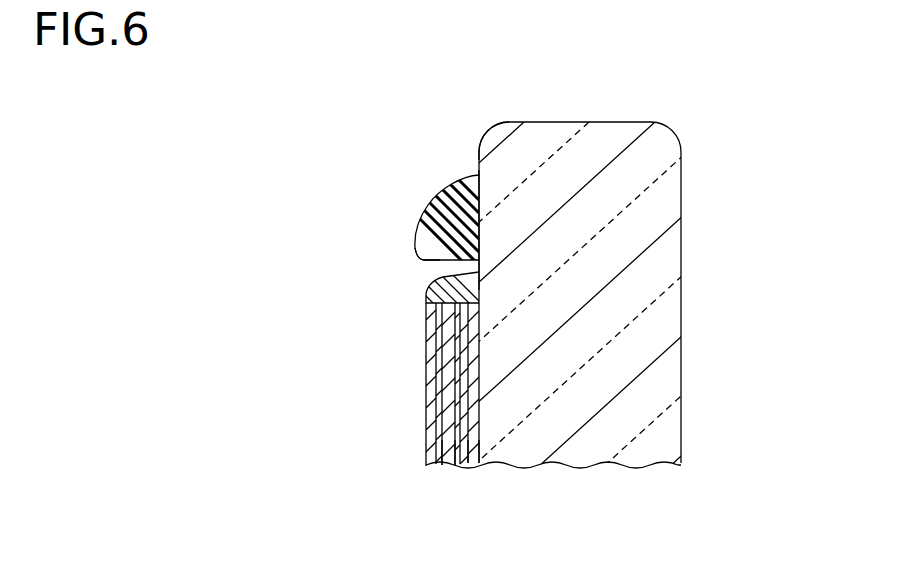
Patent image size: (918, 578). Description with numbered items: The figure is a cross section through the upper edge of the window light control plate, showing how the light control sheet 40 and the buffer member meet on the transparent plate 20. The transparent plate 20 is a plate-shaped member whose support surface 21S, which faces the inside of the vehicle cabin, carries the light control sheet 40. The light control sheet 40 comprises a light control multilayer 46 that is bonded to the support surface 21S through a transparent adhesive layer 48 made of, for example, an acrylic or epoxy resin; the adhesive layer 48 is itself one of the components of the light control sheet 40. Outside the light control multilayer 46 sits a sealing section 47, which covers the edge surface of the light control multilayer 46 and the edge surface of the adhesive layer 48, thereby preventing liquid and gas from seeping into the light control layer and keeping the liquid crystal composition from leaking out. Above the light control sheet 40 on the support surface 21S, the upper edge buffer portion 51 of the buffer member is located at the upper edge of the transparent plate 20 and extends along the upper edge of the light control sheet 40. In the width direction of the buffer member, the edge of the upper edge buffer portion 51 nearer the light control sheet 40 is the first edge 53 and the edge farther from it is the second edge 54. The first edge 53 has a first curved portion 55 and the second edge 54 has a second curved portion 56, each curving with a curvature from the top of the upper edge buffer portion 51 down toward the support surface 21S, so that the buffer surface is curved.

The transparent plate 20 is at (682, 198).
The support surface 21S is at (478, 160).
The upper edge buffer portion 51 is at (480, 205).
The first edge 53 is at (386, 256).
The second edge 54 is at (386, 181).
The first curved portion 55 is at (419, 262).
The second curved portion 56 is at (421, 200).
The sealing section 47 is at (427, 297).
The light control sheet 40 is at (425, 392).
The light control multilayer 46 is at (448, 465).
The adhesive layer 48 is at (473, 465).